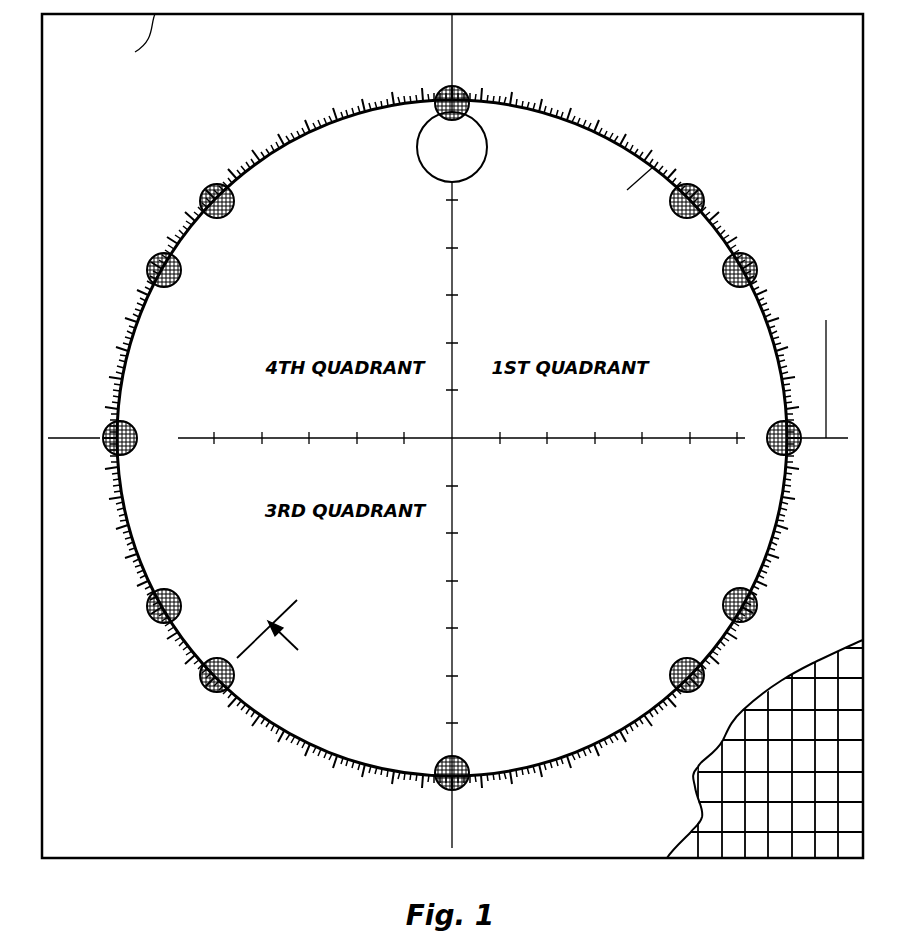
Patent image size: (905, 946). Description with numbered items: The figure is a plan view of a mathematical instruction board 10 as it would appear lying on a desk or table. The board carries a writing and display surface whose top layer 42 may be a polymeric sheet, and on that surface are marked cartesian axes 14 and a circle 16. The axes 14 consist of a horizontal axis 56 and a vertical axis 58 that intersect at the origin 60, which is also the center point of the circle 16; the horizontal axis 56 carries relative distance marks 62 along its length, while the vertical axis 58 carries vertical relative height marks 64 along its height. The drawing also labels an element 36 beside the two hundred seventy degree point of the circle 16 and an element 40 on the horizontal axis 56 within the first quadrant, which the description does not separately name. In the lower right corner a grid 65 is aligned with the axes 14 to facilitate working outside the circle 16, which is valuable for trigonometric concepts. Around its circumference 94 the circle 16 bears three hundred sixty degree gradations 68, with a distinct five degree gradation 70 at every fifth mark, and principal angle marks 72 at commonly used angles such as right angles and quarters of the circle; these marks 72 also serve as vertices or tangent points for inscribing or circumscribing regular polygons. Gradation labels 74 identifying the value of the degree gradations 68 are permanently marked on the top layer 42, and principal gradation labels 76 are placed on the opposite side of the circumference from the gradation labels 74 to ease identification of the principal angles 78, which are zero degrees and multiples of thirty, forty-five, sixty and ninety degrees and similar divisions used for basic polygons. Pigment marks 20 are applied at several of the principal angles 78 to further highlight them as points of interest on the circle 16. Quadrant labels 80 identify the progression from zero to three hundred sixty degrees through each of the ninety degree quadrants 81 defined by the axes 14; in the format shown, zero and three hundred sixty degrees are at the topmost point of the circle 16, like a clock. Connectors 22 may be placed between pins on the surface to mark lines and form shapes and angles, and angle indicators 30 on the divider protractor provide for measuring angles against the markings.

The mathematical instruction board 10 is at (166, 110).
The cartesian axes 14 is at (848, 438).
The circle 16 is at (585, 740).
The pigment marks 20 is at (105, 445).
The connectors 22 is at (185, 222).
The angle indicators 30 is at (285, 100).
The 270 degree index marker 36 is at (127, 430).
The horizontal axis line first quadrant 40 is at (572, 438).
The top layer 42 is at (456, 420).
The horizontal axis 56 is at (822, 364).
The vertical axis 58 is at (458, 820).
The origin 60 is at (448, 440).
The relative distance marks 62 is at (263, 440).
The vertical relative height marks 64 is at (440, 675).
The grid 65 is at (738, 822).
The degree gradations 68 is at (150, 275).
The five degree gradation 70 is at (140, 290).
The principal angle marks 72 is at (207, 190).
The gradation labels 74 is at (637, 123).
The principal gradation labels 76 is at (255, 655).
The principal angles 78 is at (293, 640).
The quadrant labels 80 is at (665, 510).
The quadrants 81 is at (650, 160).
The circumference 94 is at (150, 610).